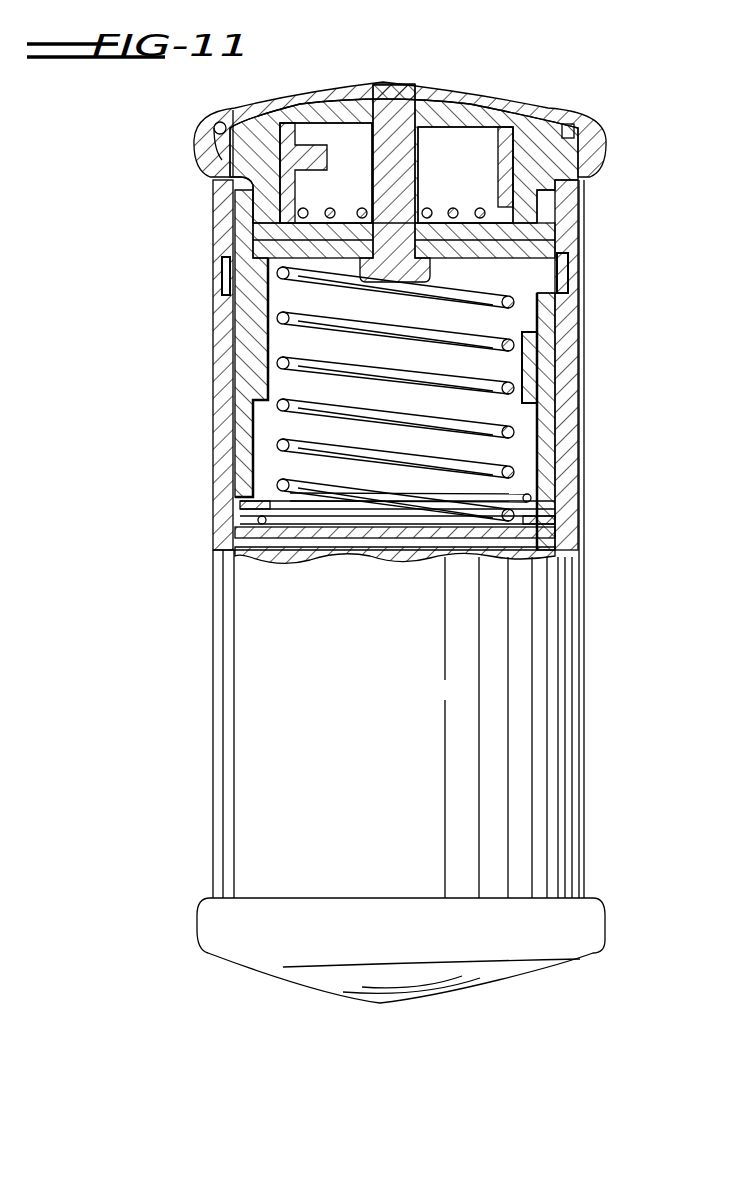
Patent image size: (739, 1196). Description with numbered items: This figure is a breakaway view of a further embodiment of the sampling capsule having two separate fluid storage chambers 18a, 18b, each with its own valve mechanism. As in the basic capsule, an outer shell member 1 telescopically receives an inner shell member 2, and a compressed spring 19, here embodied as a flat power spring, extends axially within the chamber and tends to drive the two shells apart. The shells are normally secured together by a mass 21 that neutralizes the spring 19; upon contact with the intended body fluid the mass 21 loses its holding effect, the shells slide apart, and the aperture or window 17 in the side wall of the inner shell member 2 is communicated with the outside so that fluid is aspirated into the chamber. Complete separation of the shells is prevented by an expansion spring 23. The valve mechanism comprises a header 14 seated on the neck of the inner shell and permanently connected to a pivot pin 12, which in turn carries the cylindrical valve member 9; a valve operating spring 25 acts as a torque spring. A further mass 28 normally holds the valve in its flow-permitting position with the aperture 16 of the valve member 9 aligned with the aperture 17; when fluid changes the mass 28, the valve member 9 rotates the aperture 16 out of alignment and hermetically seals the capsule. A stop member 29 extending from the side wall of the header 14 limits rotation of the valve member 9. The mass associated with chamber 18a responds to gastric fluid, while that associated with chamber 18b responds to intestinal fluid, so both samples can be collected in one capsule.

The outer shell member 1 is at (214, 126).
The inner shell member 2 is at (245, 240).
The valve member 9 is at (262, 358).
The pivot pin 12 is at (402, 94).
The header 14 is at (338, 106).
The aperture 16 is at (540, 312).
The aperture or window 17 is at (550, 324).
The fluid storage chamber 18a is at (538, 370).
The fluid storage chamber 18b is at (300, 690).
The spring 19 is at (505, 343).
The mass 21 is at (524, 104).
The expansion spring 23 is at (243, 482).
The valve operating spring 25 is at (478, 207).
The mass 28 is at (563, 213).
The stop member 29 is at (318, 160).